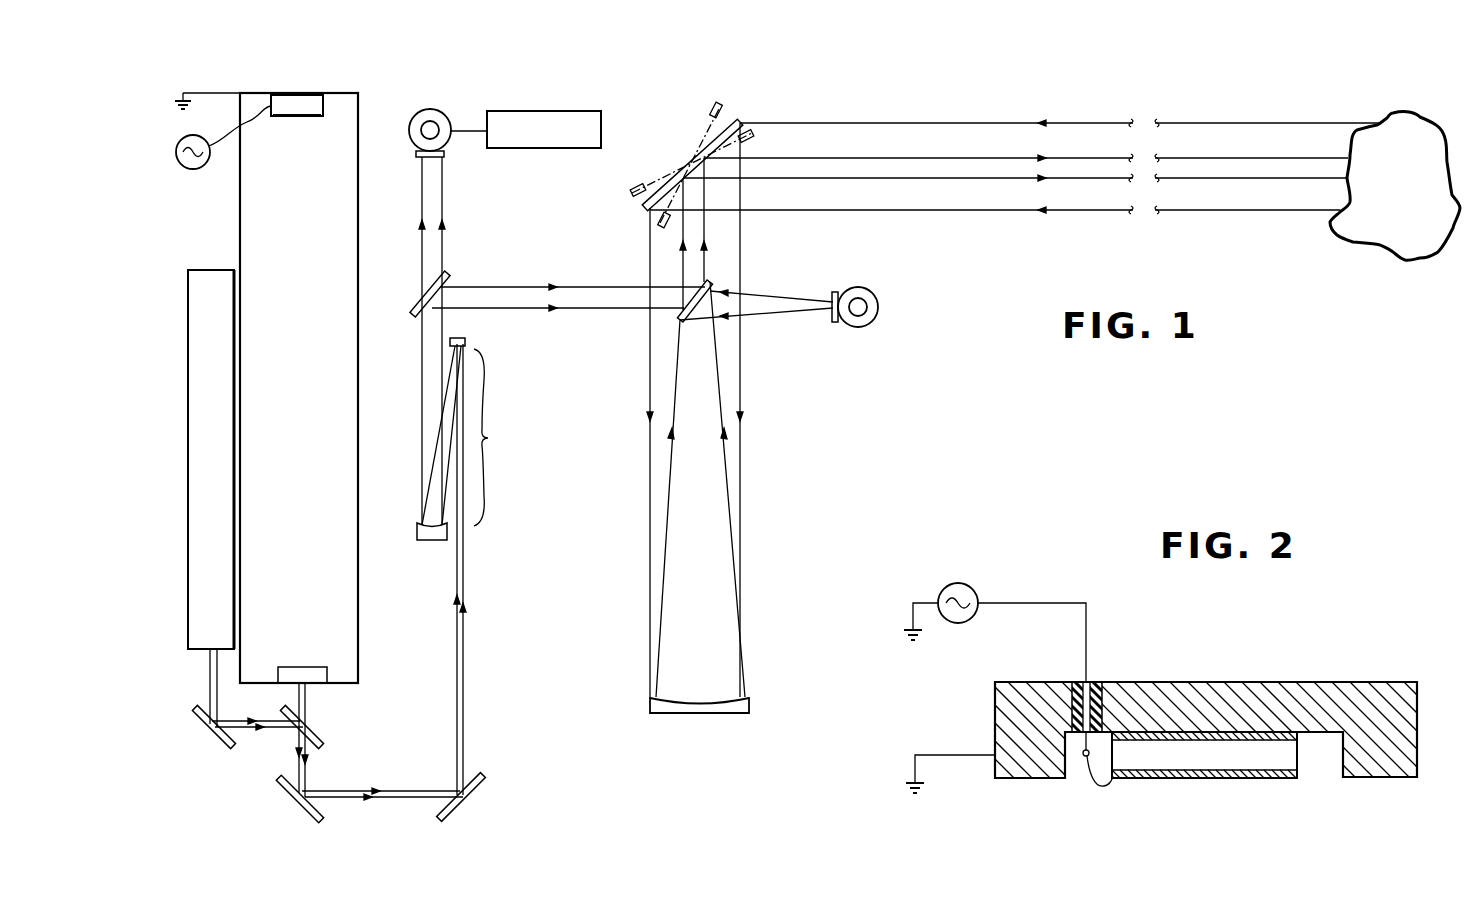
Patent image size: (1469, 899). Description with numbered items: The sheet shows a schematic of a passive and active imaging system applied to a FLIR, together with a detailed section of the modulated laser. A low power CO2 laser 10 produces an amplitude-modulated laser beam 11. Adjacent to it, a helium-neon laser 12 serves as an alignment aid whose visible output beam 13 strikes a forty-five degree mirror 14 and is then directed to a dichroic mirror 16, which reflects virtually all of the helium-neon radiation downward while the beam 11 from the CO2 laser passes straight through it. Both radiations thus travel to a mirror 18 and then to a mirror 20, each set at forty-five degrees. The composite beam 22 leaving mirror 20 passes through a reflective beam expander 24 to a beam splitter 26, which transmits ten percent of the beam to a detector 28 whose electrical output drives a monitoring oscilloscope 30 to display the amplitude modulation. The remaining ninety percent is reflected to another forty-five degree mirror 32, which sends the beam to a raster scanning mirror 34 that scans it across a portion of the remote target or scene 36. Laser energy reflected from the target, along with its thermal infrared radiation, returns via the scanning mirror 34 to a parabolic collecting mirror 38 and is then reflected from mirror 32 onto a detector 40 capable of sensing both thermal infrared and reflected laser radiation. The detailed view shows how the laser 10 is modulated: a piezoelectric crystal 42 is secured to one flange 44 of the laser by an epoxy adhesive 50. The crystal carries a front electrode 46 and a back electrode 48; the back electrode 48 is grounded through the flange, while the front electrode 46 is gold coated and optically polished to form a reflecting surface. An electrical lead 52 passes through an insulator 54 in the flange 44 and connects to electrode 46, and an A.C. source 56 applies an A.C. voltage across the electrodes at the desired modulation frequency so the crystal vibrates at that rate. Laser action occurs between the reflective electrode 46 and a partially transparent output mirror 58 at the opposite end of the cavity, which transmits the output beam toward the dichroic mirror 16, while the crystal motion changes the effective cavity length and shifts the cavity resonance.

In FIG. 1, the CO2 laser 10 is at (238, 213).
In FIG. 2, the CO2 laser 10 is at (1363, 680).
In FIG. 1, the amplitude-modulated laser beam 11 is at (307, 695).
In FIG. 1, the helium-neon laser 12 is at (203, 495).
In FIG. 1, the output beam 13 is at (208, 679).
In FIG. 1, the mirror 14 is at (200, 731).
In FIG. 1, the dichroic mirror 16 is at (318, 735).
In FIG. 1, the mirror 18 is at (311, 818).
In FIG. 1, the mirror 20 is at (441, 814).
In FIG. 1, the composite beam 22 is at (455, 662).
In FIG. 1, the reflective beam expander 24 is at (469, 348).
In FIG. 1, the beam splitter 26 is at (450, 281).
In FIG. 1, the detector 28 is at (410, 142).
In FIG. 1, the monitoring oscilloscope 30 is at (499, 110).
In FIG. 1, the mirror 32 is at (720, 272).
In FIG. 1, the raster scanning mirror 34 is at (742, 120).
In FIG. 1, the remote target or scene 36 is at (1405, 113).
In FIG. 1, the parabolic collecting mirror 38 is at (716, 713).
In FIG. 1, the detector 40 is at (878, 304).
In FIG. 1, the piezoelectric crystal (PZT) 42 is at (314, 94).
In FIG. 2, the piezoelectric crystal (PZT) 42 is at (1271, 757).
In FIG. 2, the flange 44 is at (1286, 682).
In FIG. 1, the front electrode 46 is at (300, 116).
In FIG. 2, the front electrode 46 is at (1217, 779).
In FIG. 2, the back electrode 48 is at (1151, 742).
In FIG. 2, the epoxy adhesive 50 is at (1290, 738).
In FIG. 2, the electrical lead 52 is at (1080, 758).
In FIG. 2, the insulator 54 is at (1096, 682).
In FIG. 1, the A.C. source 56 is at (186, 139).
In FIG. 2, the A.C. source 56 is at (968, 583).
In FIG. 1, the partially transparent output mirror 58 is at (309, 667).